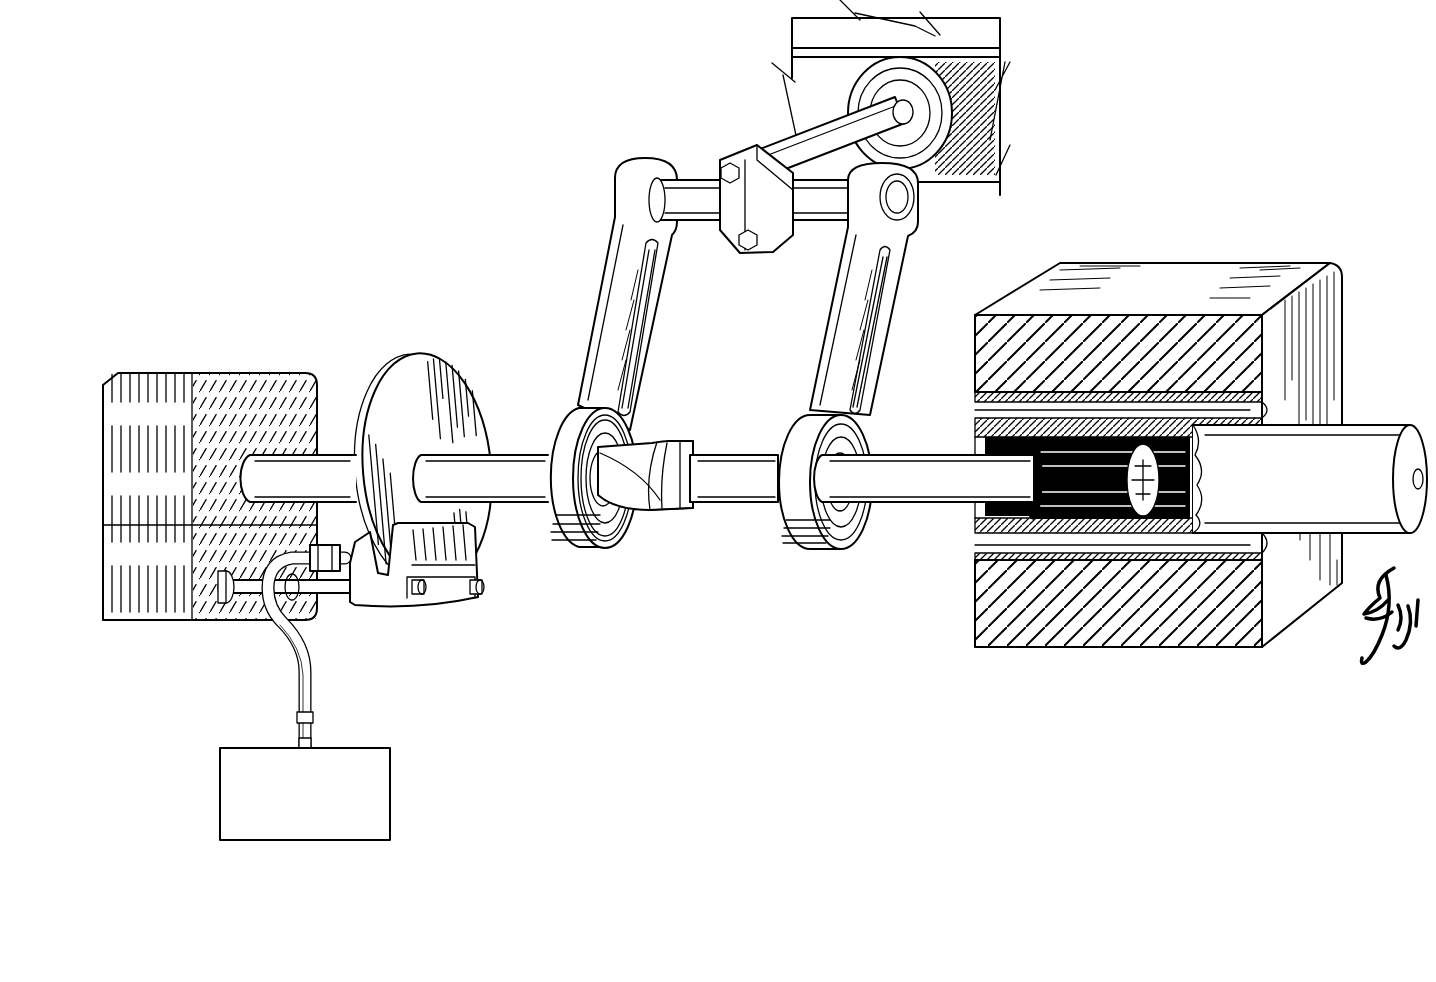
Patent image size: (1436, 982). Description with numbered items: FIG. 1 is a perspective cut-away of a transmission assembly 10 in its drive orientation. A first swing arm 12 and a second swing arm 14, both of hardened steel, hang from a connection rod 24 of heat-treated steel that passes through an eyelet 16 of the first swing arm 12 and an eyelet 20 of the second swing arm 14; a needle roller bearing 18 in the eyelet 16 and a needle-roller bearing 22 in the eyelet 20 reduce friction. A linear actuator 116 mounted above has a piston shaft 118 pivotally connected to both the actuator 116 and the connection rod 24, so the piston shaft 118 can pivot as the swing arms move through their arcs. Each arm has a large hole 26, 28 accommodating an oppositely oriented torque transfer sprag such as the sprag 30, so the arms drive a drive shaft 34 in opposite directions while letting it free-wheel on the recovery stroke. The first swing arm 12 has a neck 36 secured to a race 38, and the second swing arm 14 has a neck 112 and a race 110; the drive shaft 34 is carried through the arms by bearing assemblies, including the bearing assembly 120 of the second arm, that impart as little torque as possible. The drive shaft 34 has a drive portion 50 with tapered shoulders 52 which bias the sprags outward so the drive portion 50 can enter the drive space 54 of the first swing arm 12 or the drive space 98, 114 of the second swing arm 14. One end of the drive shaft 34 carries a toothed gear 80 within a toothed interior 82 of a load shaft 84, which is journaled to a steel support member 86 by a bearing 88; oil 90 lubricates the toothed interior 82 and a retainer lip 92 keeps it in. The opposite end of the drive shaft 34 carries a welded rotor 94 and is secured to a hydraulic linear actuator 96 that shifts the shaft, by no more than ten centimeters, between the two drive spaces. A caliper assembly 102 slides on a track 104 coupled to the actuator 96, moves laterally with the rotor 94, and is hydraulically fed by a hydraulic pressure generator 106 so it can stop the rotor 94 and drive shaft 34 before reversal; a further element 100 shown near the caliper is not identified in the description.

The transmission assembly 10 is at (478, 248).
The first swing arm 12 is at (589, 291).
The second swing arm 14 is at (864, 295).
The eyelet 16 is at (648, 180).
The needle roller bearing 18 is at (620, 155).
The eyelet 20 is at (757, 218).
The needle-roller bearing 22 is at (922, 210).
The connection rod 24 is at (770, 235).
The large hole 26 is at (646, 518).
The large hole 28 is at (849, 524).
The torque transfer sprag 30 is at (610, 529).
The drive shaft 34 is at (927, 480).
The neck 36 is at (612, 246).
The race 38 is at (573, 543).
The drive portion 50 is at (640, 463).
The tapered shoulders 52 is at (682, 437).
The drive space 54 is at (595, 443).
The toothed gear 80 is at (1107, 445).
The toothed interior 82 is at (1196, 457).
The load shaft 84 is at (1377, 447).
The steel support member 86 is at (1163, 449).
The bearing 88 is at (1262, 394).
The oil 90 is at (1147, 512).
The retainer lip 92 is at (968, 450).
The rotor 94 is at (410, 363).
The hydraulic linear actuator 96 is at (287, 362).
The drive space 98 is at (243, 617).
The hydraulic fitting 100 is at (323, 593).
The caliper assembly 102 is at (460, 607).
The track 104 is at (354, 646).
The hydraulic pressure generator 106 is at (247, 747).
The race 110 is at (805, 427).
The neck 112 is at (830, 310).
The drive space 114 is at (988, 38).
The linear actuator 116 is at (1010, 81).
The piston shaft 118 is at (950, 117).
The bearing assembly 120 is at (838, 517).